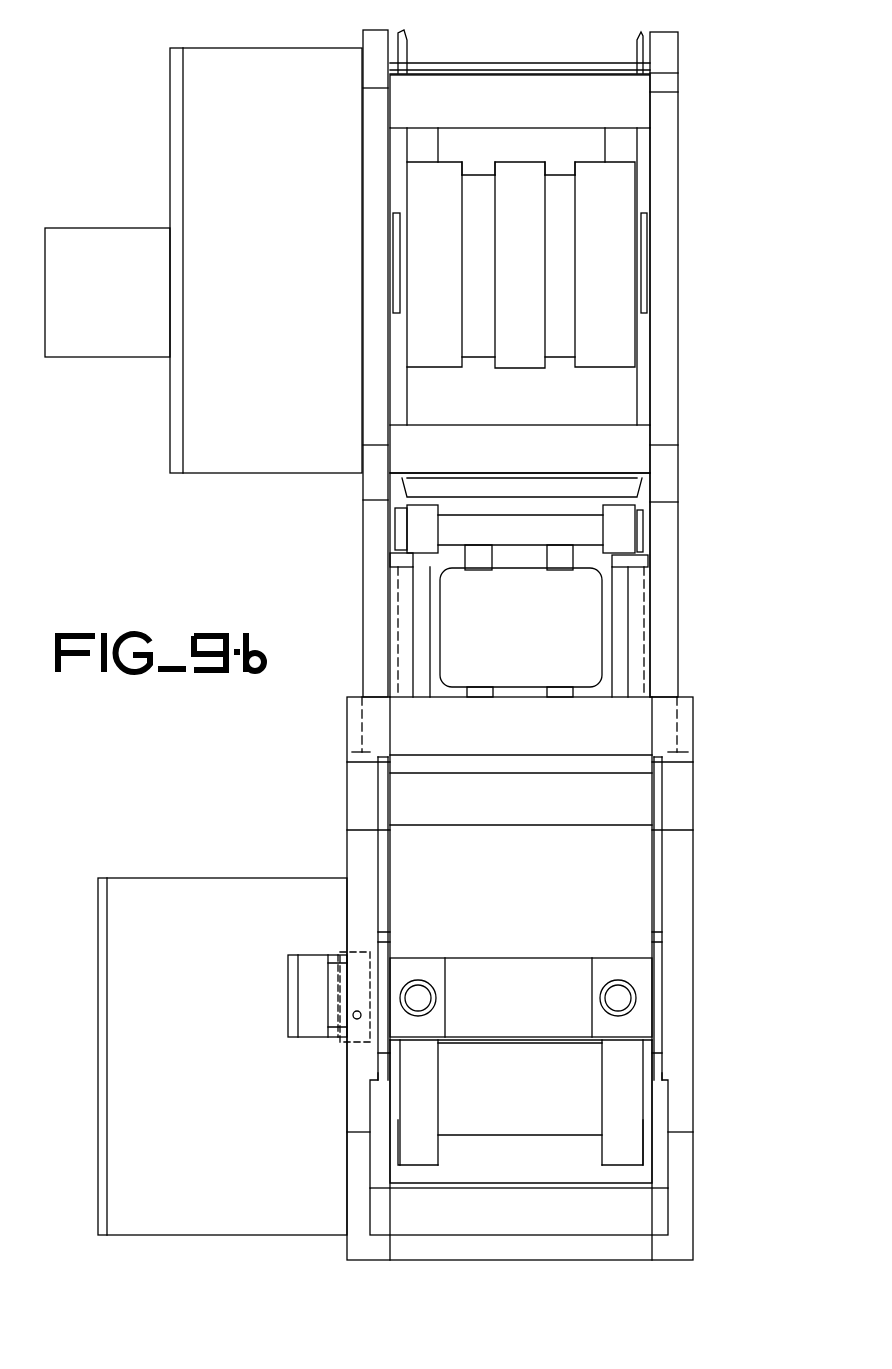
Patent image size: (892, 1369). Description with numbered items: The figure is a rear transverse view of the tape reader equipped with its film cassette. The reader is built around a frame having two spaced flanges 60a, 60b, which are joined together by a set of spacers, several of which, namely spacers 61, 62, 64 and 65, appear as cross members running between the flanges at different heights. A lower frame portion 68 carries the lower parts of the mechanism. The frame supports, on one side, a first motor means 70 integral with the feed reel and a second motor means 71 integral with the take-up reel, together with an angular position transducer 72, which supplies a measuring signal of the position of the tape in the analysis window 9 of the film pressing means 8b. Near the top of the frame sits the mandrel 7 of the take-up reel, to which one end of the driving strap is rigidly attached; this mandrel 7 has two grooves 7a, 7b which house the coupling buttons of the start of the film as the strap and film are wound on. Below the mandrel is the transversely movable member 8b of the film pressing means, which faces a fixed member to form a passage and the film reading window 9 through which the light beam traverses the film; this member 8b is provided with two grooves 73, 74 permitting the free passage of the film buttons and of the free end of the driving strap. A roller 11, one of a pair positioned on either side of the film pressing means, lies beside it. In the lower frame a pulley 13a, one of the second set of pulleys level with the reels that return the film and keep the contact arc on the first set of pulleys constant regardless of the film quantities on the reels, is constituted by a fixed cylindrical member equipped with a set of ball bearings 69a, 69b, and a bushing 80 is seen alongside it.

The flange 60a is at (655, 70).
The flange 60b is at (376, 55).
The spacer 61 is at (636, 106).
The spacer 62 is at (467, 437).
The mandrel 7 is at (606, 352).
The groove 7a is at (470, 188).
The groove 7b is at (560, 190).
The movable member of the film pressing means 8b is at (437, 563).
The roller 11 is at (618, 538).
The groove 73 is at (480, 558).
The groove 74 is at (558, 558).
The film reading window 9 is at (465, 668).
The lower frame 68 is at (625, 716).
The spacer 64 is at (585, 805).
The bushing 80 is at (630, 975).
The pulley 13a is at (503, 1062).
The ball bearing 69a is at (630, 1152).
The ball bearing 69b is at (420, 1152).
The spacer 65 is at (606, 1250).
The first motor means 70 is at (150, 896).
The second motor means 71 is at (240, 460).
The angular position transducer 72 is at (88, 238).